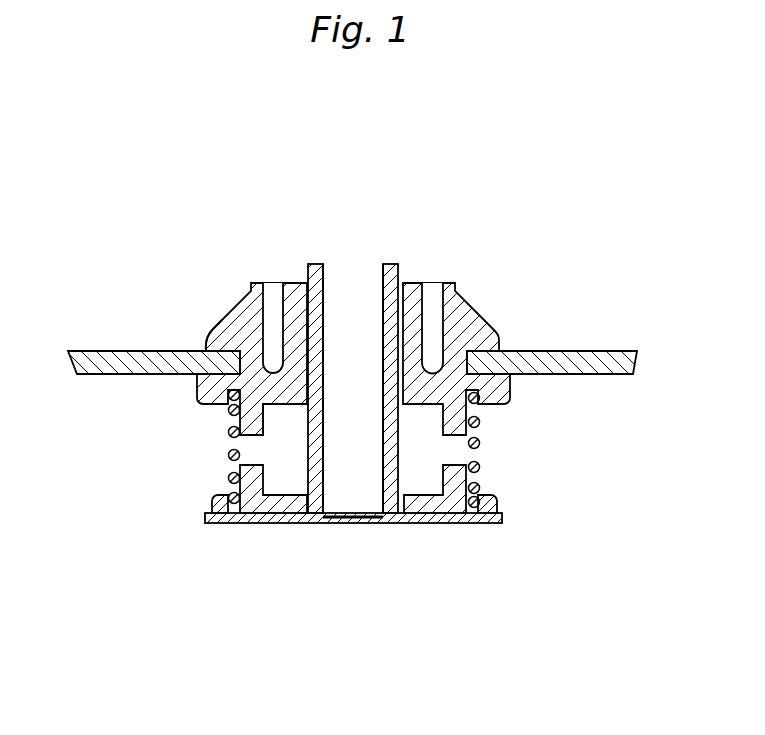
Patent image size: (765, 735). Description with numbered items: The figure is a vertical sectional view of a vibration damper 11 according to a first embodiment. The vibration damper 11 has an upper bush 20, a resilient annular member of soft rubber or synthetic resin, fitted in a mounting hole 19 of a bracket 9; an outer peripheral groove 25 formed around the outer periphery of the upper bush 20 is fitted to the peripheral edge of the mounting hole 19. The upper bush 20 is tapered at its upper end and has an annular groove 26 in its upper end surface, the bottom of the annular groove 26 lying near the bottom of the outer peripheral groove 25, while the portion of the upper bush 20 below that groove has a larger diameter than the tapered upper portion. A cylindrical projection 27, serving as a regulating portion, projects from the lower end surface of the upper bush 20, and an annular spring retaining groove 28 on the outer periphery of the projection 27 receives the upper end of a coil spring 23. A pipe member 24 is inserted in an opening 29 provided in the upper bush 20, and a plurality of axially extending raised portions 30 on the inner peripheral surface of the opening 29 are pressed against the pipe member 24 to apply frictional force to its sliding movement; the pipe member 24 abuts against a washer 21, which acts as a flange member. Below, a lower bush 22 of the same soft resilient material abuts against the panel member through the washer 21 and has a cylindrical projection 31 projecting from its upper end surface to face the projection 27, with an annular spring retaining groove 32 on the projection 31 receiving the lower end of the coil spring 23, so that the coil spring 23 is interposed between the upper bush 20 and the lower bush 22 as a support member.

The bracket 9 is at (594, 360).
The vibration damper 11 is at (507, 280).
The mounting hole 19 is at (212, 338).
The upper bush 20 is at (238, 313).
The washer 21 is at (210, 522).
The lower bush 22 is at (212, 505).
The coil spring 23 is at (480, 466).
The pipe member 24 is at (389, 290).
The outer peripheral groove 25 is at (178, 350).
The annular groove 26 is at (273, 281).
The cylindrical projection 27 is at (263, 435).
The spring retaining groove 28 is at (480, 402).
The opening 29 is at (331, 305).
The raised portions 30 is at (430, 307).
The cylindrical projection 31 is at (240, 468).
The spring retaining groove 32 is at (492, 500).